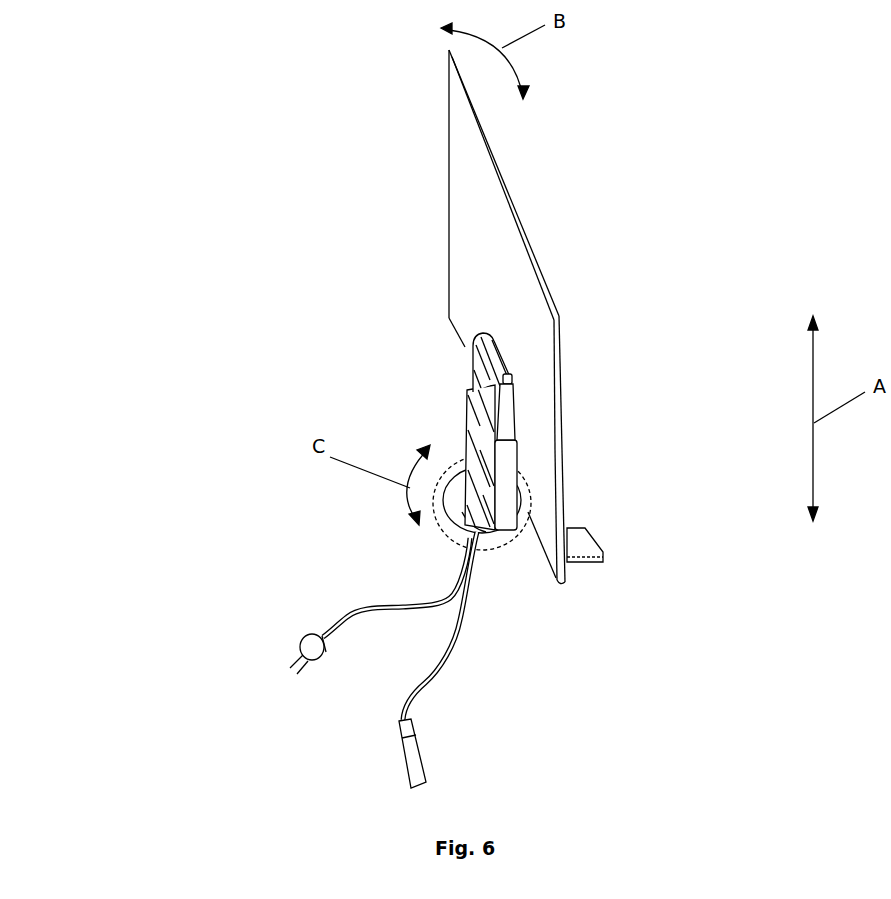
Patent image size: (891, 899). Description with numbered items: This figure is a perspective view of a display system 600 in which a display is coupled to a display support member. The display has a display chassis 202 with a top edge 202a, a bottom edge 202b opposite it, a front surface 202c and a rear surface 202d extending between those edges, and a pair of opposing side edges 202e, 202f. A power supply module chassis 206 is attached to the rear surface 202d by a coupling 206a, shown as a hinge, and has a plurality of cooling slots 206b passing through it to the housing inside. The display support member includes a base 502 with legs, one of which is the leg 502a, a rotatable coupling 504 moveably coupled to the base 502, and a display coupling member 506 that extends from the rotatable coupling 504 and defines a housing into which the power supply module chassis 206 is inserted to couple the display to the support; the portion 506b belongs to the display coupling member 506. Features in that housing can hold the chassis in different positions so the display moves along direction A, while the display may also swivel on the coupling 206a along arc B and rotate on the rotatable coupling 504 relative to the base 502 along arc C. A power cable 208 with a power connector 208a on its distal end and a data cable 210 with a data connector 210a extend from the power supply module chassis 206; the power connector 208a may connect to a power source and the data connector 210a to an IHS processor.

The display system 600 is at (220, 276).
The display chassis 202 is at (558, 582).
The top edge 202a is at (513, 203).
The bottom edge 202b is at (463, 363).
The front surface 202c is at (556, 279).
The rear surface 202d is at (482, 227).
The side edge 202e is at (442, 102).
The side edge 202f is at (559, 452).
The power supply module chassis 206 is at (506, 410).
The coupling 206a is at (510, 376).
The cooling slots 206b is at (477, 382).
The display coupling member 506 is at (510, 485).
The holder portion 506b is at (467, 435).
The base 502 is at (458, 530).
The leg 502a is at (588, 550).
The rotatable coupling 504 is at (472, 520).
The power cable 208 is at (402, 617).
The power connector 208a is at (298, 640).
The data cable 210 is at (458, 647).
The data connector 210a is at (412, 760).